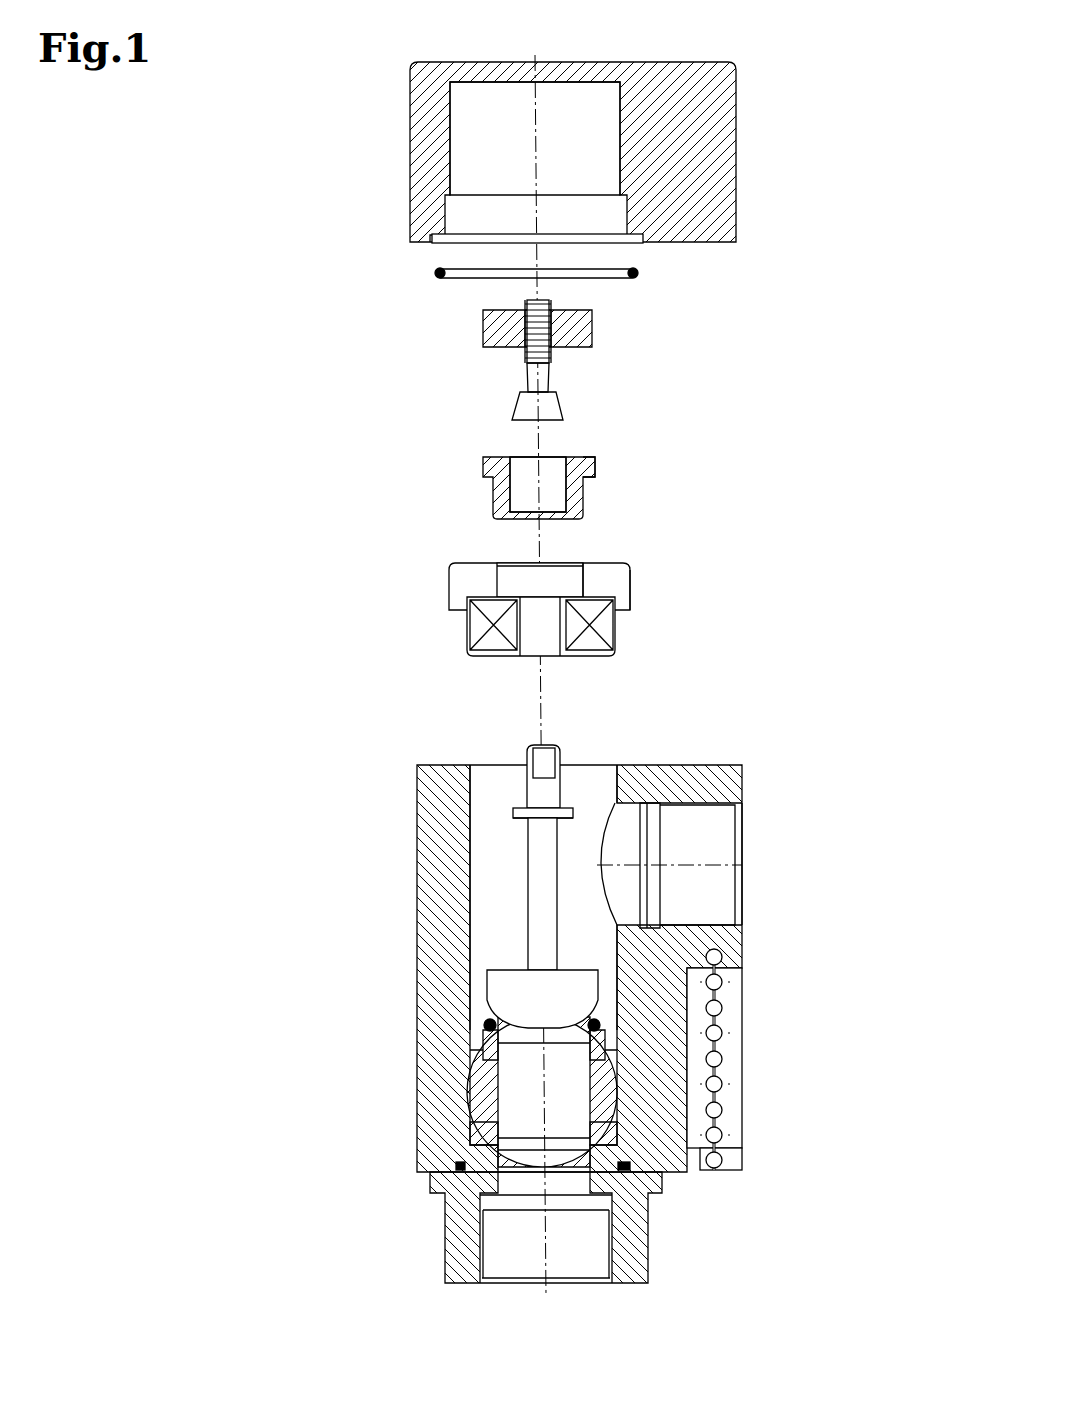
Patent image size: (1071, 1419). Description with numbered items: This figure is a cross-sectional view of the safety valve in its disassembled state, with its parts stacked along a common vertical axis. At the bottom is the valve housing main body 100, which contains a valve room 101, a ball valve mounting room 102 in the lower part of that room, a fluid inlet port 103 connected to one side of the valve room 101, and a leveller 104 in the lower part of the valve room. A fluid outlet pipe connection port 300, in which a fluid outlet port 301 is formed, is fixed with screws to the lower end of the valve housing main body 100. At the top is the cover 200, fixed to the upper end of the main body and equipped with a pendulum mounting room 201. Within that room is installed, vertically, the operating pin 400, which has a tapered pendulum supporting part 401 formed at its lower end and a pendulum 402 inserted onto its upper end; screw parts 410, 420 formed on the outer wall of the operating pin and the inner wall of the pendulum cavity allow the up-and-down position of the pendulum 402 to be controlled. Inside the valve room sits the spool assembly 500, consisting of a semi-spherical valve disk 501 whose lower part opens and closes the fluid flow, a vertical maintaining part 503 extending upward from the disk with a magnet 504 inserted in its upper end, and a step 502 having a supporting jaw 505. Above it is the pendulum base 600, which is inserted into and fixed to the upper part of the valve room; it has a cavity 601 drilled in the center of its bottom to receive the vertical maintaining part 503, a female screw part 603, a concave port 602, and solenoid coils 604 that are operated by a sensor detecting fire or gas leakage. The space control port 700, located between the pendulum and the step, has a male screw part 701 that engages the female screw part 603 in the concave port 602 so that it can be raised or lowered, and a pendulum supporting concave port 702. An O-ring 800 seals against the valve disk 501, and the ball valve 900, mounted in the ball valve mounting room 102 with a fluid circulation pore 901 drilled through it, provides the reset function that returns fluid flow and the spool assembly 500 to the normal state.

The valve housing main body 100 is at (566, 968).
The valve room 101 is at (470, 913).
The ball valve mounting room 102 is at (478, 1056).
The fluid inlet port 103 is at (730, 832).
The leveller 104 is at (722, 1078).
The cover 200 is at (416, 77).
The pendulum mounting room 201 is at (480, 145).
The fluid outlet pipe connection port 300 is at (520, 1227).
The fluid outlet port 301 is at (600, 1243).
The operating pin 400 is at (502, 360).
The tapered pendulum supporting part 401 is at (563, 405).
The pendulum 402 is at (483, 320).
The screw part 410 is at (522, 372).
The screw part 420 is at (522, 352).
The spool assembly 500 is at (564, 864).
The semi-spherical valve disk 501 is at (488, 990).
The step 502 is at (553, 880).
The vertical maintaining part 503 is at (520, 796).
The magnet 504 is at (527, 748).
The supporting jaw 505 is at (573, 812).
The pendulum base 600 is at (528, 606).
The cavity 601 is at (556, 654).
The concave port 602 is at (570, 570).
The female screw part 603 is at (631, 592).
The solenoid coils 604 is at (487, 642).
The space control port 700 is at (537, 472).
The male screw part 701 is at (583, 492).
The pendulum supporting concave port 702 is at (525, 493).
The O-ring 800 is at (618, 1015).
The ball valve 900 is at (478, 1092).
The fluid circulation pore 901 is at (480, 1135).